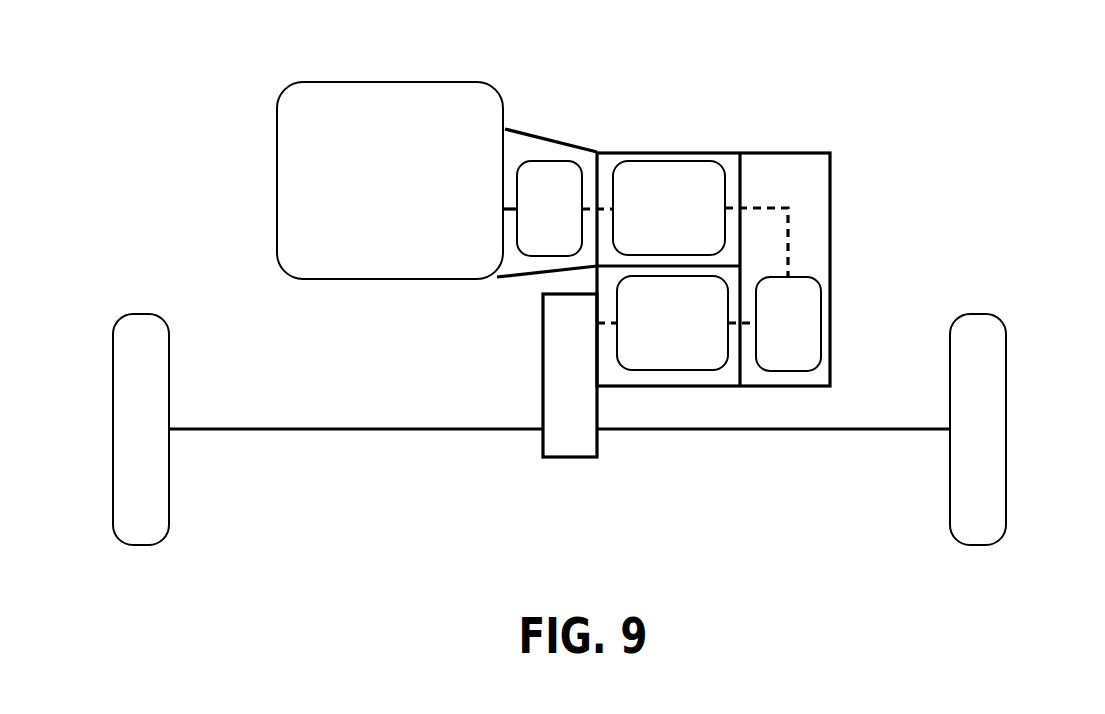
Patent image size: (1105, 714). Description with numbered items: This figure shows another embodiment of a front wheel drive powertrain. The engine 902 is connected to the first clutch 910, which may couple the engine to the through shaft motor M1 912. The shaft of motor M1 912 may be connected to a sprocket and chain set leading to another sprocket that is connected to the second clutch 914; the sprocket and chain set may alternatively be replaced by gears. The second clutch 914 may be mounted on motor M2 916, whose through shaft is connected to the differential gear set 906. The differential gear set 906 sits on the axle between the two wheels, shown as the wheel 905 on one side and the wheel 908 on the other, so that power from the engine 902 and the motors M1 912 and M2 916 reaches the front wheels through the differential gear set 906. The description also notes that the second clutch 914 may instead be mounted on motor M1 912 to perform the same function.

The engine 902 is at (390, 180).
The wheel 905 is at (169, 500).
The differential gear set 906 is at (592, 458).
The wheel 908 is at (1006, 503).
The clutch 1 910 is at (548, 180).
The through shaft motor M1 912 is at (669, 208).
The clutch 2 914 is at (795, 345).
The motor M2 916 is at (672, 323).